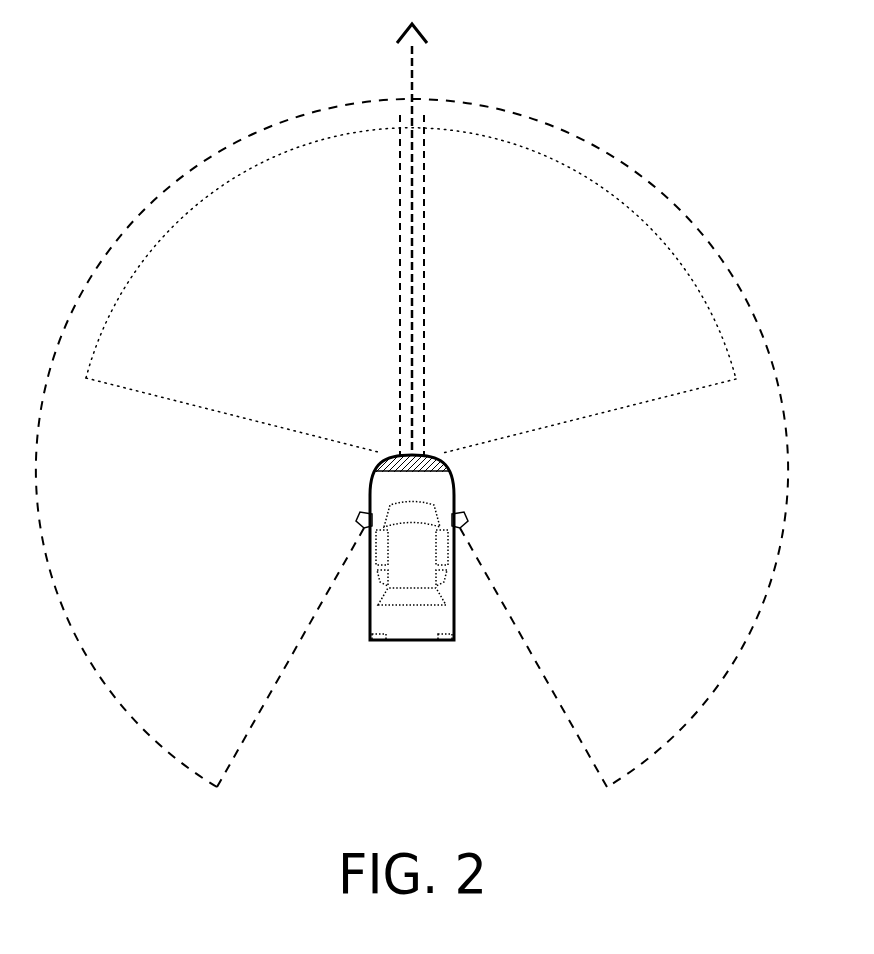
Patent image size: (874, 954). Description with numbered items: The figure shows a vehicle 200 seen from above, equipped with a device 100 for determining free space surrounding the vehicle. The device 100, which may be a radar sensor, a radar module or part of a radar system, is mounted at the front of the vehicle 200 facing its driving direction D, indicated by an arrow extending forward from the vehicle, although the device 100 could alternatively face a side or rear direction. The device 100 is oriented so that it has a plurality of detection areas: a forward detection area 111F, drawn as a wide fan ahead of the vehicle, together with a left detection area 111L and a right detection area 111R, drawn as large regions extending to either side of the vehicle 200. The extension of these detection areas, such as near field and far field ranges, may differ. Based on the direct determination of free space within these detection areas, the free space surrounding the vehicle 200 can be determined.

The direction D is at (408, 72).
The device 100 is at (437, 464).
The vehicle 200 is at (428, 648).
The forward detection area 111F is at (168, 358).
The left detection area 111L is at (243, 720).
The right detection area 111R is at (637, 720).